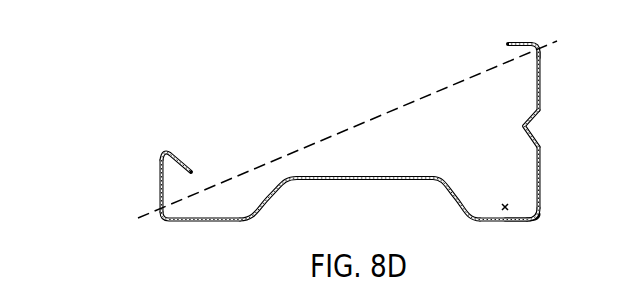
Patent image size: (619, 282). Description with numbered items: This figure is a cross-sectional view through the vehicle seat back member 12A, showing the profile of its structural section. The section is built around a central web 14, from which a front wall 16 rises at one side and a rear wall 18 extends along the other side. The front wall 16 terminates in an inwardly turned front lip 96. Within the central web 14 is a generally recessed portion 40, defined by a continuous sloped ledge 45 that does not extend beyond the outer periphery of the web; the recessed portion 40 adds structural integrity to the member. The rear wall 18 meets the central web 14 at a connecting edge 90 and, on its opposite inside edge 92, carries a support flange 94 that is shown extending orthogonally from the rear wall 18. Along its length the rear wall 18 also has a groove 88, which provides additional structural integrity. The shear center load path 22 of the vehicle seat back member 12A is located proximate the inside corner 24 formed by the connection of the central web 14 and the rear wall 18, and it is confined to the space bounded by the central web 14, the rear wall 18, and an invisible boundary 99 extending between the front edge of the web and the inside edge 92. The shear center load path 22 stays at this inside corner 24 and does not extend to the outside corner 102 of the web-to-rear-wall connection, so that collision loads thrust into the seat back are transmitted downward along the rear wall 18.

The vehicle seat back member 12A is at (110, 144).
The central web 14 is at (200, 222).
The front wall 16 is at (160, 182).
The rear wall 18 is at (541, 74).
The shear center load path 22 is at (500, 196).
The inside corner 24 is at (527, 193).
The recessed portion 40 is at (398, 179).
The sloped ledge 45 is at (262, 204).
The groove 88 is at (526, 126).
The connecting edge 90 is at (532, 215).
The inside edge 92 is at (541, 49).
The support flange 94 is at (515, 43).
The front lip 96 is at (183, 158).
The invisible boundary 99 is at (388, 112).
The outside corner 102 is at (518, 227).